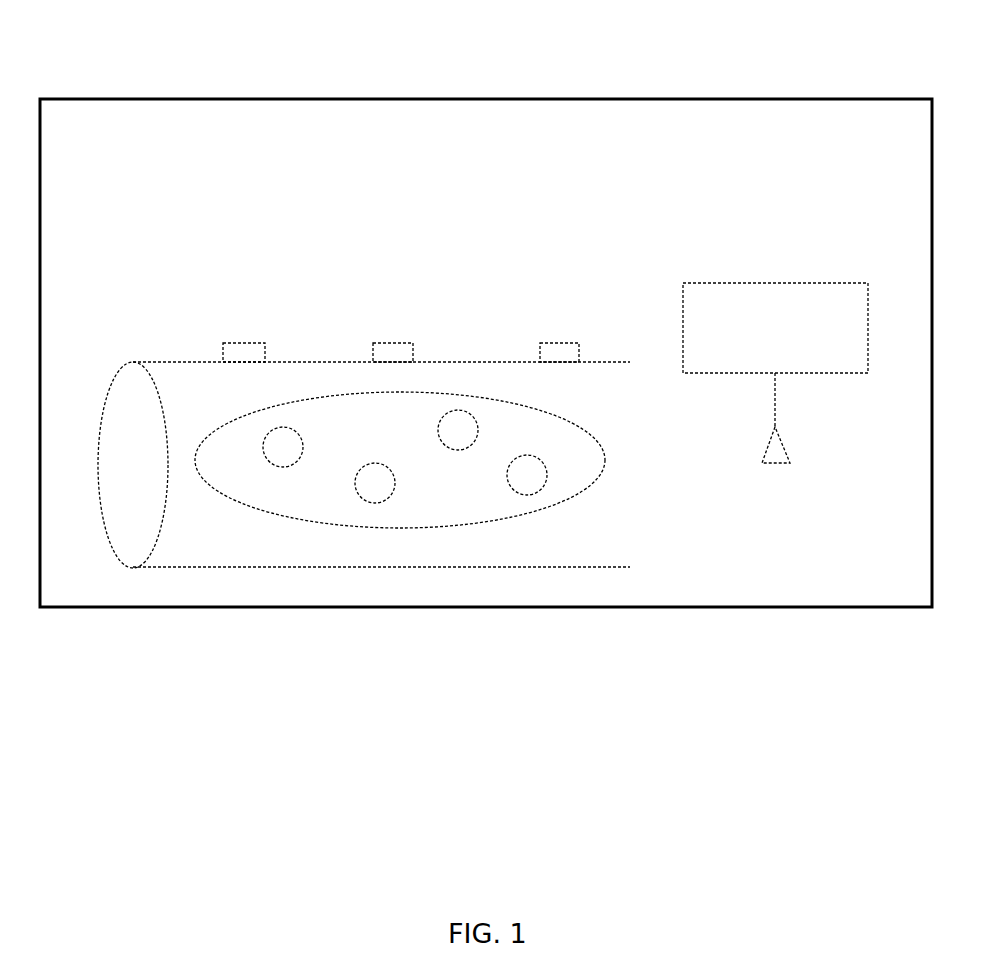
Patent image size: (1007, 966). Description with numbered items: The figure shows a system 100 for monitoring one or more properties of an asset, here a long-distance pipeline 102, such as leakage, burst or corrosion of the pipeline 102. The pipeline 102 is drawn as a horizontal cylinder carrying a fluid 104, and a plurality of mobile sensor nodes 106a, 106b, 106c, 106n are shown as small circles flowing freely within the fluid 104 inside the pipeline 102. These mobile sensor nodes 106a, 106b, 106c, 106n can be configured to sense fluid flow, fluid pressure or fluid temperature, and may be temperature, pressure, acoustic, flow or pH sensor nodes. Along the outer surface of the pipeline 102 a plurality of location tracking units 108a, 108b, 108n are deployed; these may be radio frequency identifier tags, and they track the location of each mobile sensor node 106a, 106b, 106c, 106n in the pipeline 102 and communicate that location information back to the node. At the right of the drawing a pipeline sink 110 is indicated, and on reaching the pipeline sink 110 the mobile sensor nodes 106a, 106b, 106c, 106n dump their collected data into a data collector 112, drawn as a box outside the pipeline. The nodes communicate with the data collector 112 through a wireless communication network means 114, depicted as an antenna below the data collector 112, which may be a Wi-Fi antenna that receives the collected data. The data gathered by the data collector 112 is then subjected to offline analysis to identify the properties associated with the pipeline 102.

The system 100 is at (432, 70).
The long-distance pipeline 102 is at (229, 553).
The fluid 104 is at (260, 481).
The mobile sensor node 106a is at (323, 433).
The mobile sensor node 106b is at (391, 462).
The mobile sensor node 106c is at (491, 409).
The mobile sensor node 106n is at (555, 447).
The location tracking unit 108a is at (273, 314).
The location tracking unit 108b is at (419, 314).
The location tracking unit 108n is at (583, 314).
The pipeline sink 110 is at (665, 481).
The data collector 112 is at (775, 290).
The wireless communication network means 114 is at (760, 457).